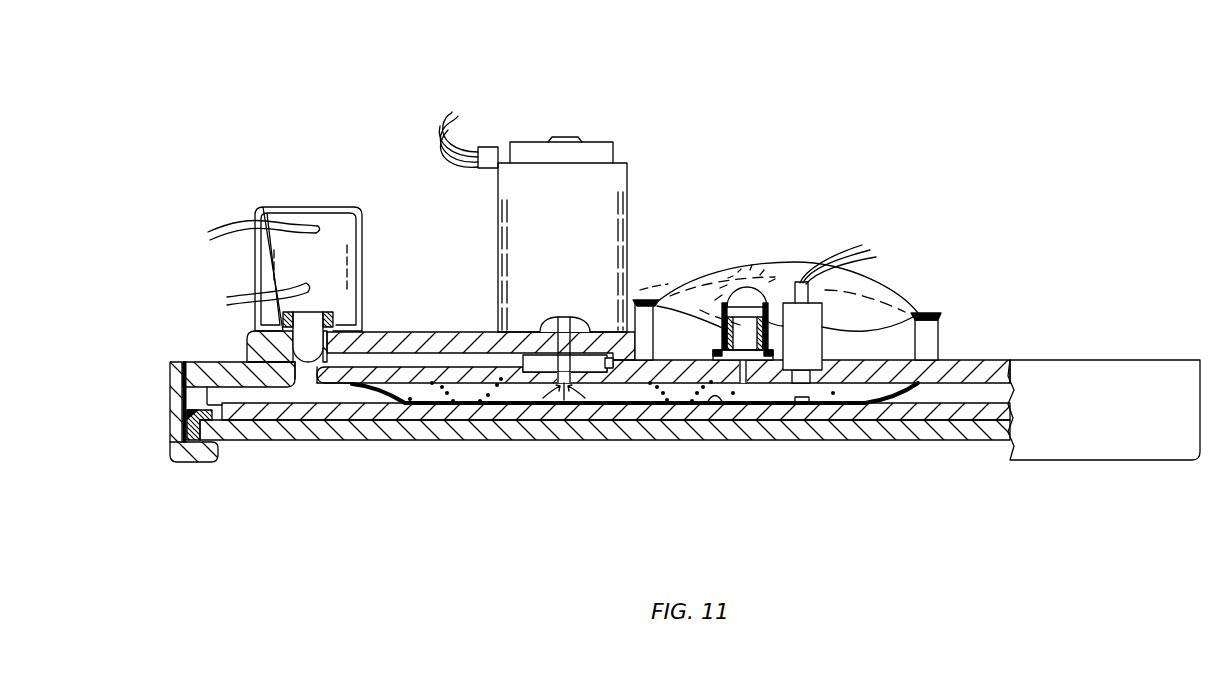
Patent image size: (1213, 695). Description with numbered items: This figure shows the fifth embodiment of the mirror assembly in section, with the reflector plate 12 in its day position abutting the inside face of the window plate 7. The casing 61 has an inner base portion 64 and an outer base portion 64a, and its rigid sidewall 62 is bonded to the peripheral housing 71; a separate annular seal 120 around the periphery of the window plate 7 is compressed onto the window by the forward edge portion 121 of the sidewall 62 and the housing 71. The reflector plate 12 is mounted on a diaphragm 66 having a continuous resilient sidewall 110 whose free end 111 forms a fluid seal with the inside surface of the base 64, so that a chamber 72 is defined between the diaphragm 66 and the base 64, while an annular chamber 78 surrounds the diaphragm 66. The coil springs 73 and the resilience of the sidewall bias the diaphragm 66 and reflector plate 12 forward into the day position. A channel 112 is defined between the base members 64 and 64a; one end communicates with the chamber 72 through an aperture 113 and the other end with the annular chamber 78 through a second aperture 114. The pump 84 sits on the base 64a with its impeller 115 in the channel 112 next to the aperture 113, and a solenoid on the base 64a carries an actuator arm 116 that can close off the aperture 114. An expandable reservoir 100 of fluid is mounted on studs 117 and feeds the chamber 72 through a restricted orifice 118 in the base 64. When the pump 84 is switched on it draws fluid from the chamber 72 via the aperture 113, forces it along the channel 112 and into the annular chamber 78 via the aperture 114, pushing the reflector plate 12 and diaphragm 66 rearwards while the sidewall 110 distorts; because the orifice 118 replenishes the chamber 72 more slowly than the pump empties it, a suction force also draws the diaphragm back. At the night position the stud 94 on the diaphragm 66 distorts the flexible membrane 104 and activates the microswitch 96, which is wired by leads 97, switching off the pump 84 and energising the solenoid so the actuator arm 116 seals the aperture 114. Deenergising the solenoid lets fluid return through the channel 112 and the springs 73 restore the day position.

The window plate 7 is at (502, 433).
The reflector plate 12 is at (470, 408).
The casing 61 is at (192, 362).
The sidewall 62 is at (186, 387).
The inner base portion 64 is at (1012, 362).
The outer base portion 64a is at (442, 345).
The diaphragm 66 is at (708, 400).
The housing 71 is at (181, 455).
The chamber 72 is at (853, 393).
The coil springs 73 is at (440, 395).
The annular chamber 78 is at (213, 362).
The pump 84 is at (610, 175).
The stud 94 is at (802, 404).
The microswitch 96 is at (872, 278).
The leads 97 is at (232, 232).
The expandable reservoir 100 is at (783, 300).
The flexible membrane 104 is at (835, 400).
The resilient sidewall 110 is at (383, 390).
The free end 111 is at (357, 383).
The channel 112 is at (468, 375).
The aperture 113 is at (567, 407).
The second aperture 114 is at (310, 373).
The impeller 115 is at (585, 355).
The actuator arm 116 is at (307, 342).
The studs 117 is at (928, 342).
The restricted orifice 118 is at (757, 377).
The annular seal 120 is at (193, 443).
The forward edge portion 121 is at (200, 400).